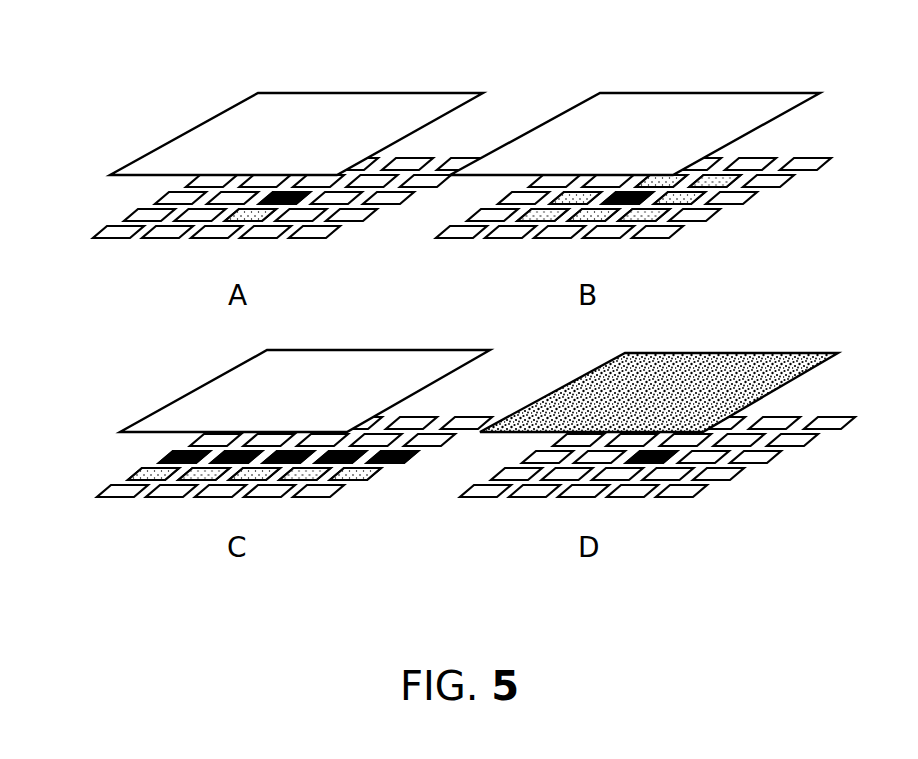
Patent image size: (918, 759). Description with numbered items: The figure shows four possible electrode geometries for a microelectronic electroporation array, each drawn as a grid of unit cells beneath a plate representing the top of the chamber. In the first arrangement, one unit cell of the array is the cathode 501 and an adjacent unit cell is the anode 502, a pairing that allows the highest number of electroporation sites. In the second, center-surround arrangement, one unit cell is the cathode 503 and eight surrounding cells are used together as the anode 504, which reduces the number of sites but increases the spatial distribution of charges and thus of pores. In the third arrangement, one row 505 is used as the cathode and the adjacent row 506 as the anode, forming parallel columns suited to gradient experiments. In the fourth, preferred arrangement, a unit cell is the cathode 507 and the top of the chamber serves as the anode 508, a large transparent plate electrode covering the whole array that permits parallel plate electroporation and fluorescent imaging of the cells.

The cathode 501 is at (316, 192).
The anode 502 is at (238, 222).
The cathode 503 is at (686, 200).
The anode 504 is at (658, 188).
The row 505 is at (404, 458).
The adjacent row 506 is at (143, 477).
The cathode 507 is at (655, 468).
The anode 508 is at (783, 377).